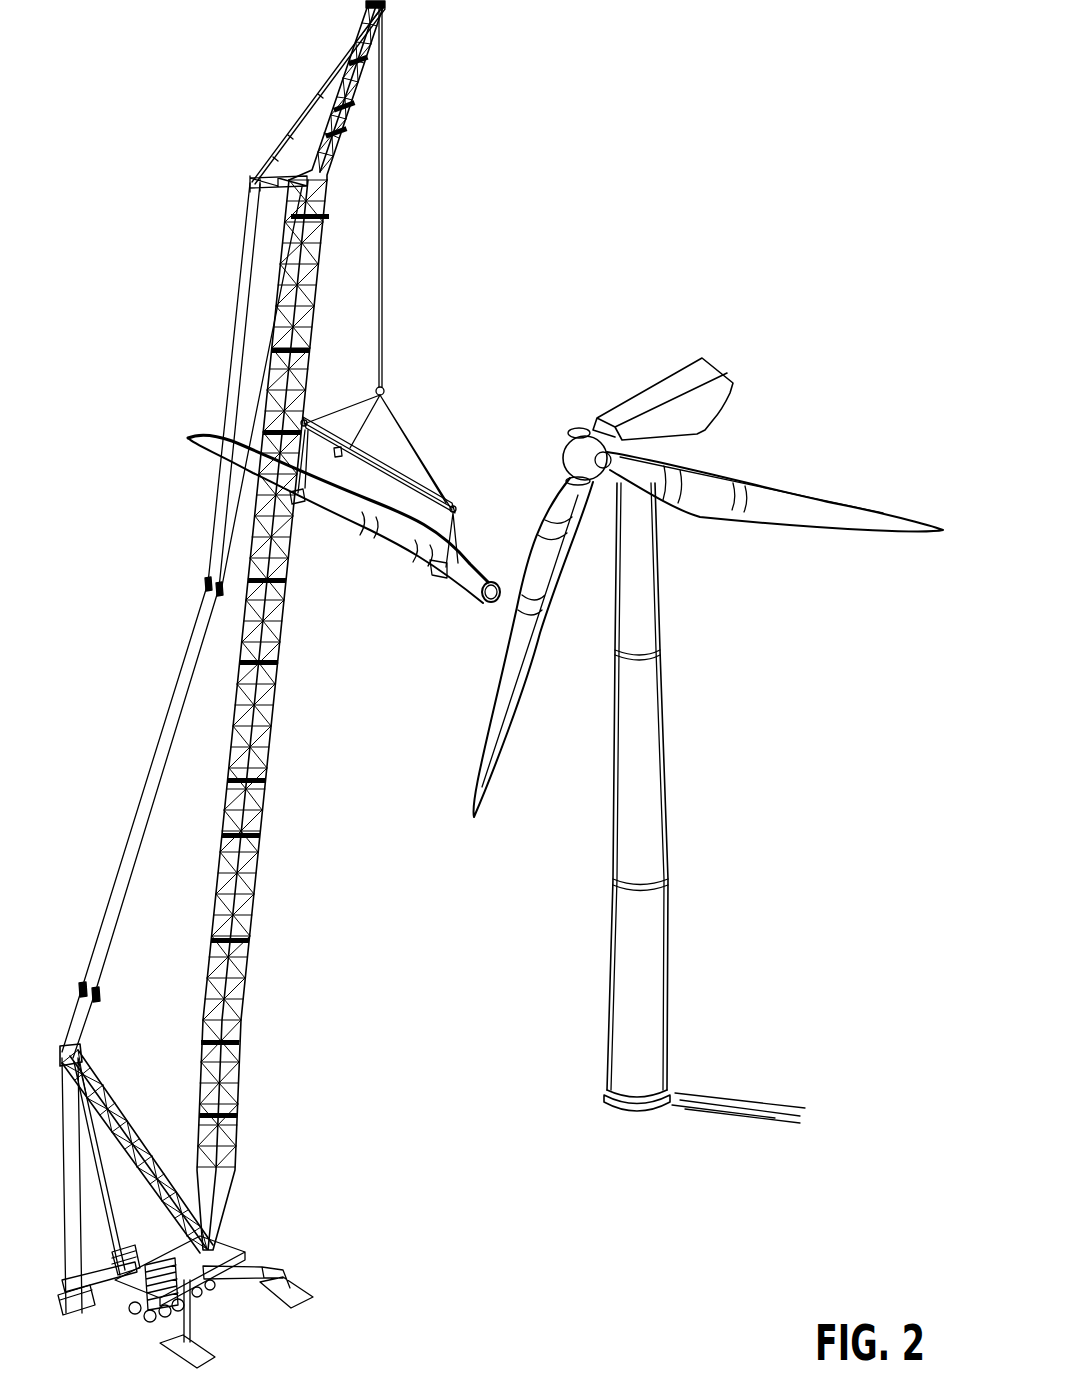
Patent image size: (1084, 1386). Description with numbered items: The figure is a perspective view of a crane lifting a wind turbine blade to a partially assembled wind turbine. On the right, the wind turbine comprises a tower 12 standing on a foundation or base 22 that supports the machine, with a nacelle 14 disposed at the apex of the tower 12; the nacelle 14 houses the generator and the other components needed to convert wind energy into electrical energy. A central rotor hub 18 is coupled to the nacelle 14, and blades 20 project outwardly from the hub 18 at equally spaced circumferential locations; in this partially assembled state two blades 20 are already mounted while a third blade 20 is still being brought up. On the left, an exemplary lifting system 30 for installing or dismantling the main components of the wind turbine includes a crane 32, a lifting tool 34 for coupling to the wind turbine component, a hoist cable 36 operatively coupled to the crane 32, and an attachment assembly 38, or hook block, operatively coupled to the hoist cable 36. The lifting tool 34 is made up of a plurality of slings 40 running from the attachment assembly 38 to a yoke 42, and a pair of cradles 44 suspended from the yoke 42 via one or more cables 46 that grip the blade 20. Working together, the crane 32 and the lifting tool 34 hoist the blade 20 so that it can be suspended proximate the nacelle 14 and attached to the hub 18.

The tower 12 is at (659, 771).
The nacelle 14 is at (673, 380).
The rotor hub 18 is at (565, 455).
The blade 20 is at (367, 533).
The foundation or base 22 is at (606, 1092).
The lifting system 30 is at (100, 328).
The crane 32 is at (268, 897).
The lifting tool 34 is at (466, 411).
The hoist cable 36 is at (383, 291).
The attachment assembly 38 is at (385, 388).
The slings 40 is at (382, 438).
The yoke 42 is at (446, 495).
The cradles 44 is at (300, 503).
The cables 46 is at (311, 440).